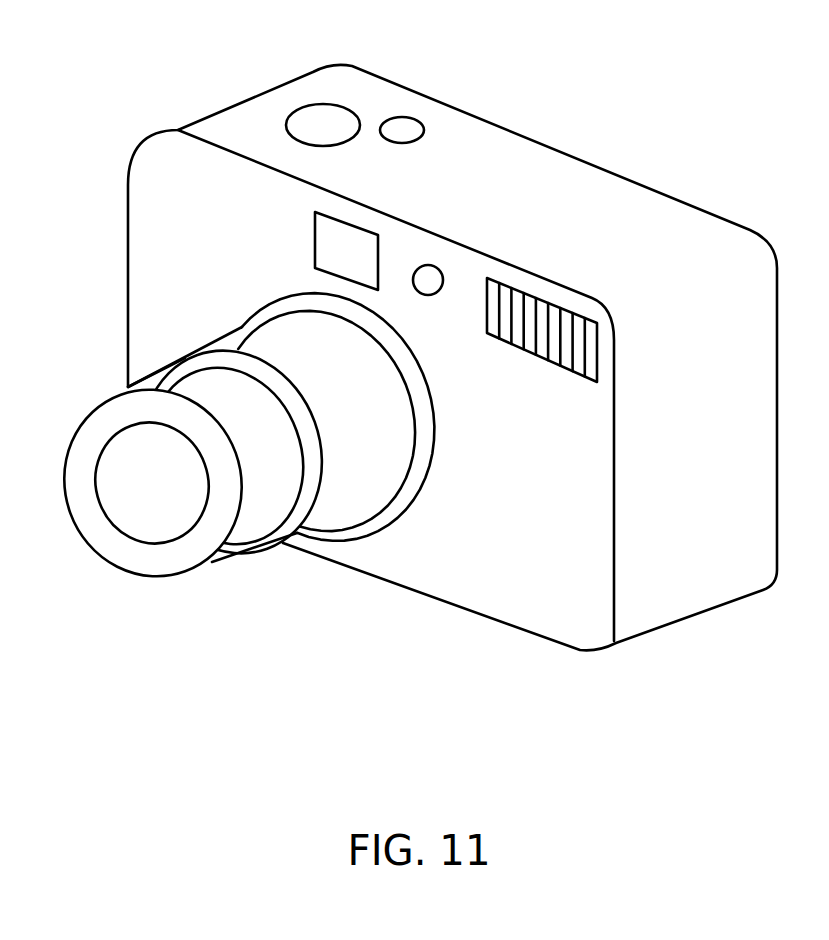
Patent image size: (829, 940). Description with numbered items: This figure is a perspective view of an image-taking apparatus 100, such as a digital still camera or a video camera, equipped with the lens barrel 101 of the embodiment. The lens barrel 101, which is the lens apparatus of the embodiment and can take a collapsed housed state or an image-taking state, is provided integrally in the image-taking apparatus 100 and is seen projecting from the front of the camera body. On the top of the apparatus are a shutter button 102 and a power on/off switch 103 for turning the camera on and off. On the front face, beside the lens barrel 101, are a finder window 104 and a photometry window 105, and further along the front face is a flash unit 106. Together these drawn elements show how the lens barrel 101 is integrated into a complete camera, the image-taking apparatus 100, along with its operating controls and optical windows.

The image-taking apparatus 100 is at (478, 580).
The lens barrel 101 is at (330, 507).
The shutter button 102 is at (320, 118).
The power on/off switch 103 is at (400, 127).
The finder window 104 is at (358, 237).
The photometry window 105 is at (423, 278).
The flash unit 106 is at (550, 310).